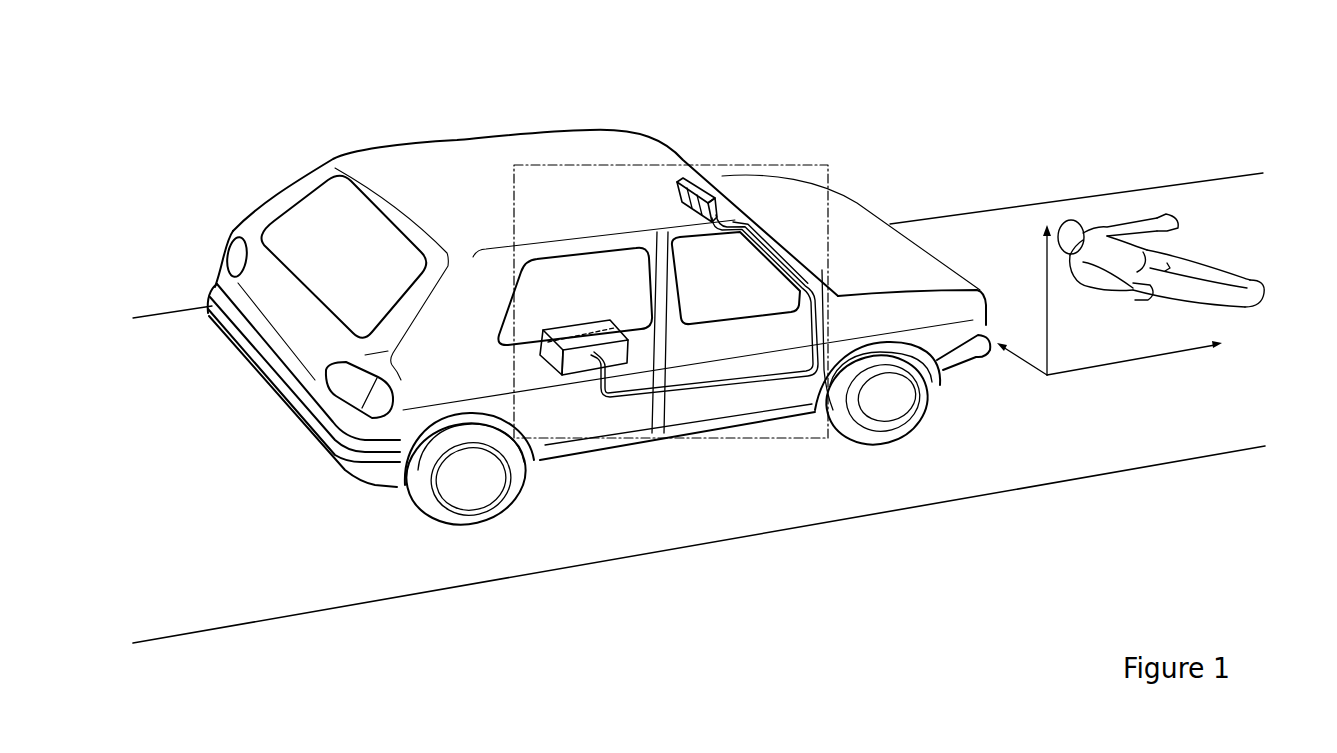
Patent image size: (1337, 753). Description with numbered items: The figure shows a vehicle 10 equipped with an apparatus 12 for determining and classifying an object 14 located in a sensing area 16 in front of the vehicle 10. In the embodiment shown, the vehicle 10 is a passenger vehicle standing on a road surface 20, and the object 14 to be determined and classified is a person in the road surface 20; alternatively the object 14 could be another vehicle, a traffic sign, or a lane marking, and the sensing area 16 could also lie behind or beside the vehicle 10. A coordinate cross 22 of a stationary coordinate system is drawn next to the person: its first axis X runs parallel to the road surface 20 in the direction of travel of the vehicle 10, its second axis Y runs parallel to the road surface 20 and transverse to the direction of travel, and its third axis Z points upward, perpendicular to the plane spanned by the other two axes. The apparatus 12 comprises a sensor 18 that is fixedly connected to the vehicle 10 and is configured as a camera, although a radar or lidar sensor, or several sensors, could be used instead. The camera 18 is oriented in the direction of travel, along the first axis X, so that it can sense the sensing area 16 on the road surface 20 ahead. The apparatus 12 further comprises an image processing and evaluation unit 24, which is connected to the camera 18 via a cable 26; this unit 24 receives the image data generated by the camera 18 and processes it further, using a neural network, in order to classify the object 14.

The vehicle 10 is at (599, 284).
The apparatus 12 is at (700, 318).
The object 14 is at (1165, 305).
The sensing area 16 is at (1244, 239).
The sensor 18 is at (693, 182).
The road surface 20 is at (379, 603).
The coordinate cross 22 is at (1114, 366).
The image processing and evaluation unit 24 is at (584, 332).
The cable 26 is at (780, 238).